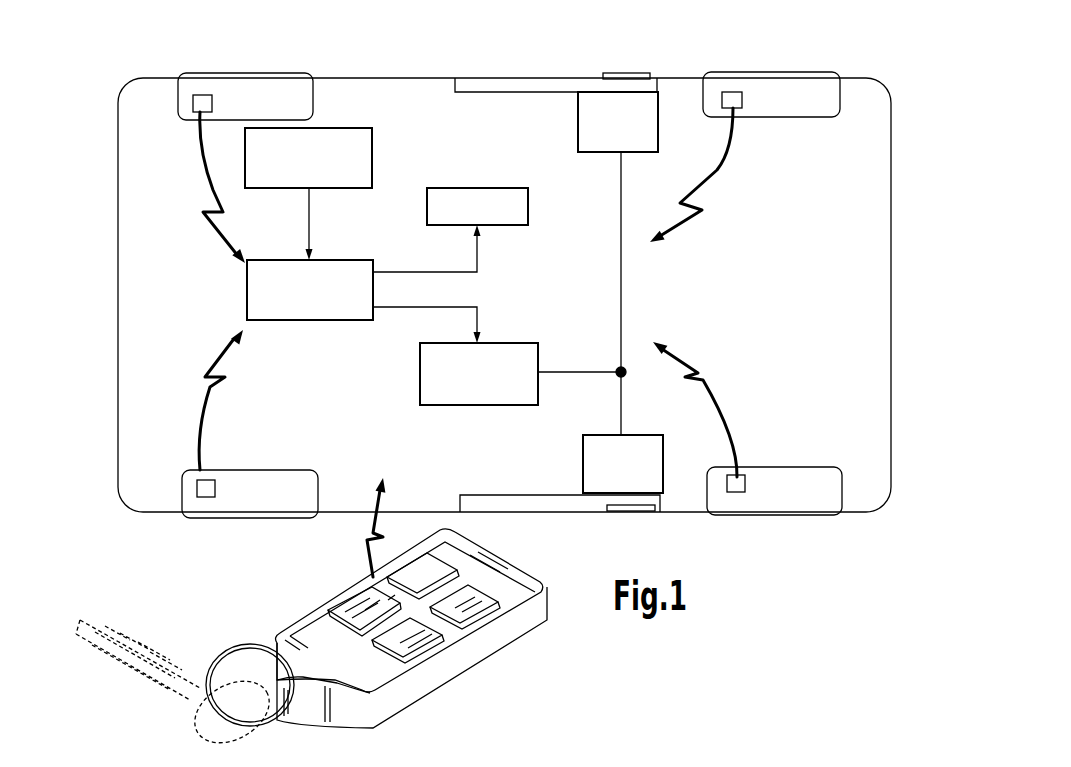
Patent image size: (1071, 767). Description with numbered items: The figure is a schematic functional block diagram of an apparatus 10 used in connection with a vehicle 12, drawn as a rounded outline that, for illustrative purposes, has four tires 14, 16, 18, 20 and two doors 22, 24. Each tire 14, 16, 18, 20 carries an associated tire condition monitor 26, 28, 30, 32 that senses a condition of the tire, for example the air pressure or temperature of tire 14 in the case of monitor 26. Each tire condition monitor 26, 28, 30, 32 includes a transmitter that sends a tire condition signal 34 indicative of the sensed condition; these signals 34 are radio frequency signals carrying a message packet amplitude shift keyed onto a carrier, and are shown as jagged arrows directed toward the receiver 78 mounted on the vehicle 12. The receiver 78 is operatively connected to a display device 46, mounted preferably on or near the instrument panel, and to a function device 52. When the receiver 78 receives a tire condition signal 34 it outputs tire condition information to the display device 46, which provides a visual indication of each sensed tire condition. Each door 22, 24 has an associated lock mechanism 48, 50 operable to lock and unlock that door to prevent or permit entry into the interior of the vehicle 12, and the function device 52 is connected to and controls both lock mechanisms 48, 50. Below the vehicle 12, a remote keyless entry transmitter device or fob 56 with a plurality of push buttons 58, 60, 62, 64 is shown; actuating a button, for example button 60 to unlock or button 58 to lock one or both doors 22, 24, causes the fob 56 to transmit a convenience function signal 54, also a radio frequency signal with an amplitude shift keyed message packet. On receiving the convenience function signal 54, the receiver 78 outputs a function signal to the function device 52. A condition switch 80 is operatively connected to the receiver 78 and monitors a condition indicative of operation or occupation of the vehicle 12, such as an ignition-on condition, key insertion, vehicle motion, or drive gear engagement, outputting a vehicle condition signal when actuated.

The apparatus 10 is at (86, 126).
The vehicle 12 is at (108, 230).
The tire 14 is at (248, 503).
The tire 16 is at (273, 92).
The tire 18 is at (790, 495).
The tire 20 is at (775, 95).
The door 22 is at (547, 505).
The door 24 is at (498, 85).
The tire condition monitor 26 is at (215, 488).
The tire condition monitor 28 is at (200, 95).
The tire condition monitor 30 is at (735, 493).
The tire condition monitor 32 is at (725, 92).
The tire condition signal 34 is at (204, 184).
The display device 46 is at (447, 188).
The lock mechanism 48 is at (583, 470).
The lock mechanism 50 is at (578, 118).
The function device 52 is at (503, 343).
The convenience function signal 54 is at (372, 515).
The fob 56 is at (500, 675).
The push button 58 is at (427, 578).
The push button 60 is at (493, 605).
The push button 62 is at (363, 602).
The push button 64 is at (393, 637).
The receiver 78 is at (305, 321).
The condition switch 80 is at (373, 158).